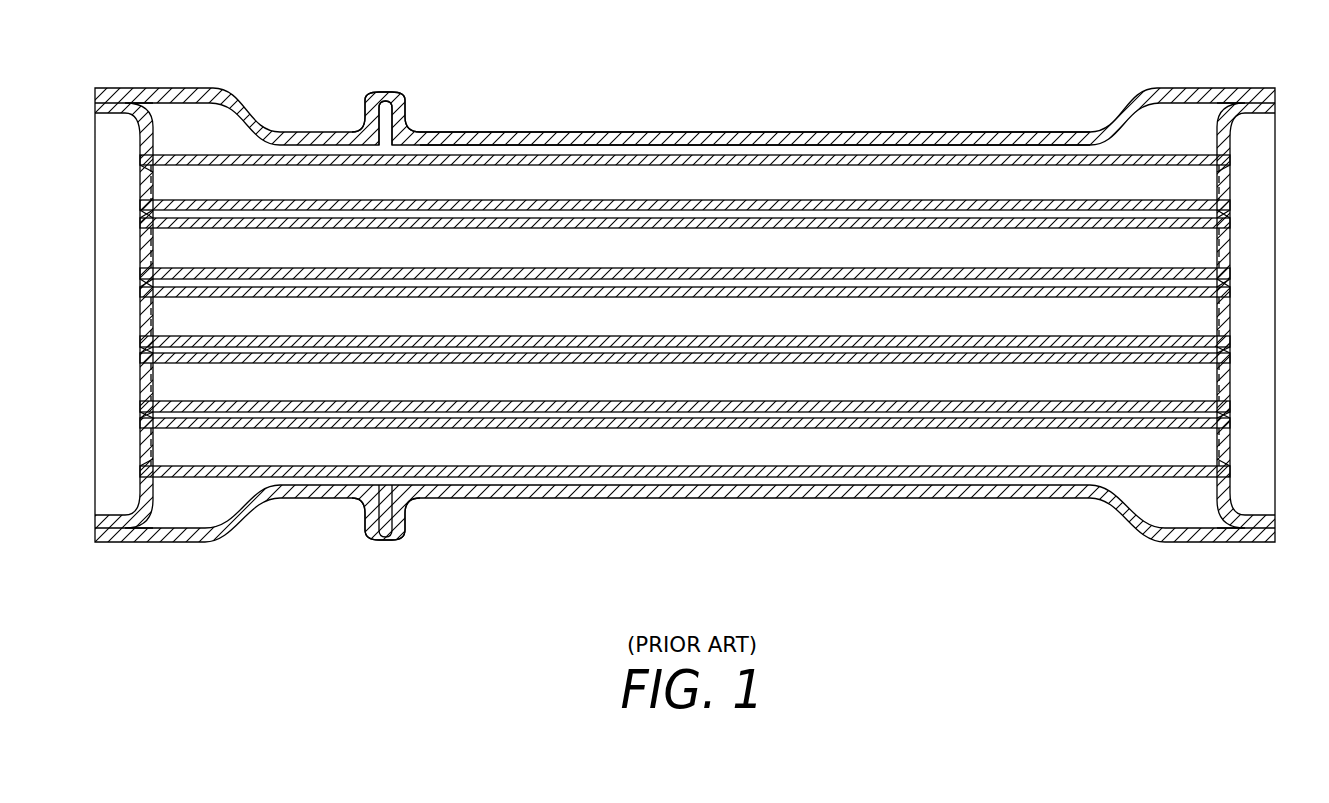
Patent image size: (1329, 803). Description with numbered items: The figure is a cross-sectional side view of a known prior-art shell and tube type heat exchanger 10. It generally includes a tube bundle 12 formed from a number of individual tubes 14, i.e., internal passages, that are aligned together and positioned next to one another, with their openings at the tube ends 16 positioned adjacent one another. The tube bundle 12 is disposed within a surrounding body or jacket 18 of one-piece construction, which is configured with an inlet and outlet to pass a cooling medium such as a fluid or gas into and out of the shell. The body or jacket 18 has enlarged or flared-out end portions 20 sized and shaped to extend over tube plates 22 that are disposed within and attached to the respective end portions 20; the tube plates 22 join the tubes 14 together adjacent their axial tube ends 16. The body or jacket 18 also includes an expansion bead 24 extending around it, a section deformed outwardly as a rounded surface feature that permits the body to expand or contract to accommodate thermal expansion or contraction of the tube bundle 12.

The shell and tube type heat exchanger 10 is at (812, 110).
The tube bundle 12 is at (740, 140).
The tubes 14 is at (630, 226).
The tube ends 16 is at (148, 306).
The body or jacket 18 is at (893, 125).
The end portions 20 is at (143, 99).
The tube plates 22 is at (128, 492).
The expansion bead 24 is at (386, 92).